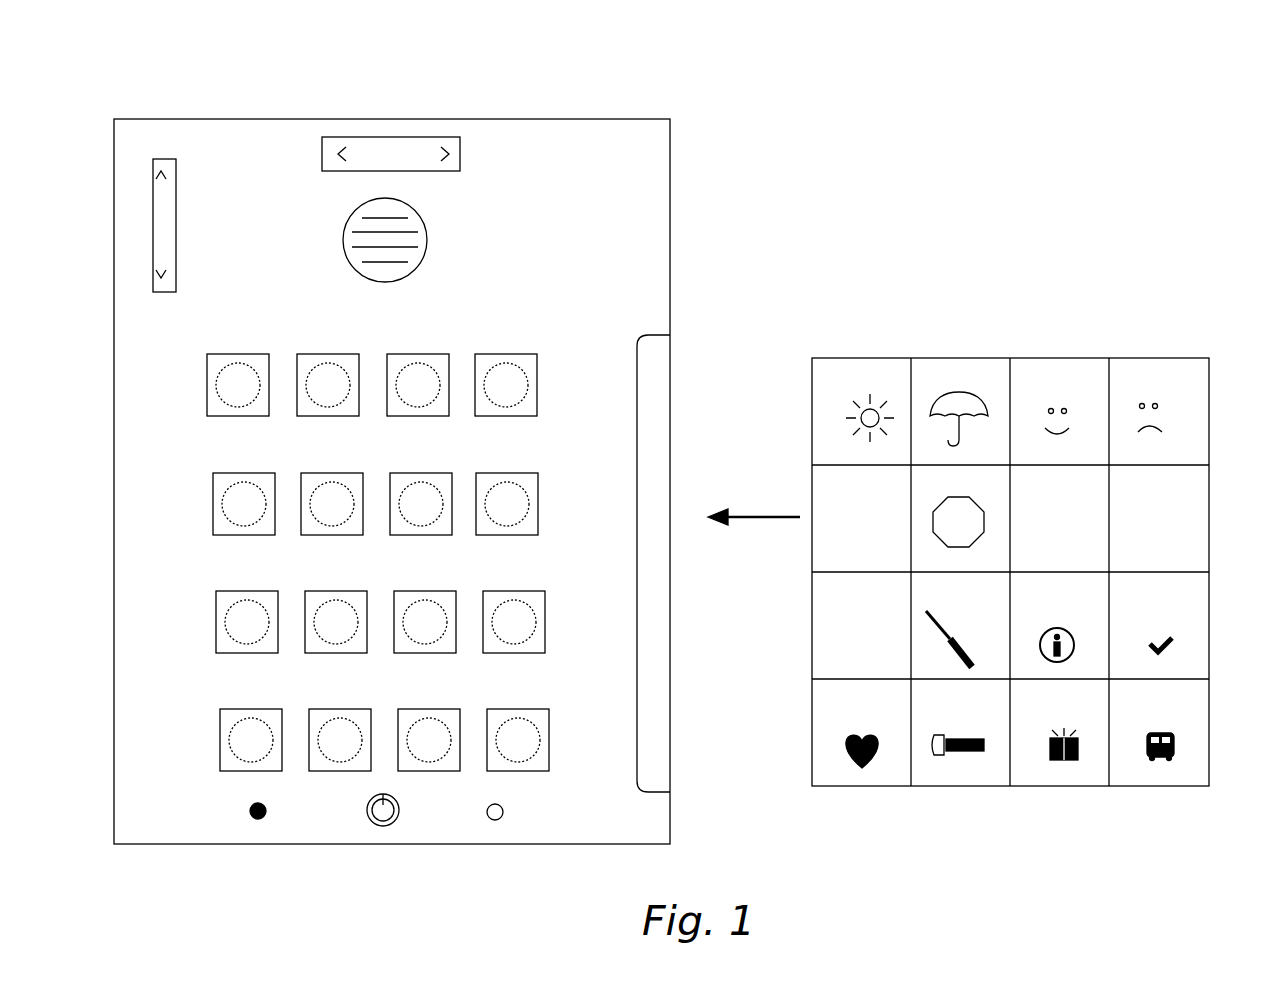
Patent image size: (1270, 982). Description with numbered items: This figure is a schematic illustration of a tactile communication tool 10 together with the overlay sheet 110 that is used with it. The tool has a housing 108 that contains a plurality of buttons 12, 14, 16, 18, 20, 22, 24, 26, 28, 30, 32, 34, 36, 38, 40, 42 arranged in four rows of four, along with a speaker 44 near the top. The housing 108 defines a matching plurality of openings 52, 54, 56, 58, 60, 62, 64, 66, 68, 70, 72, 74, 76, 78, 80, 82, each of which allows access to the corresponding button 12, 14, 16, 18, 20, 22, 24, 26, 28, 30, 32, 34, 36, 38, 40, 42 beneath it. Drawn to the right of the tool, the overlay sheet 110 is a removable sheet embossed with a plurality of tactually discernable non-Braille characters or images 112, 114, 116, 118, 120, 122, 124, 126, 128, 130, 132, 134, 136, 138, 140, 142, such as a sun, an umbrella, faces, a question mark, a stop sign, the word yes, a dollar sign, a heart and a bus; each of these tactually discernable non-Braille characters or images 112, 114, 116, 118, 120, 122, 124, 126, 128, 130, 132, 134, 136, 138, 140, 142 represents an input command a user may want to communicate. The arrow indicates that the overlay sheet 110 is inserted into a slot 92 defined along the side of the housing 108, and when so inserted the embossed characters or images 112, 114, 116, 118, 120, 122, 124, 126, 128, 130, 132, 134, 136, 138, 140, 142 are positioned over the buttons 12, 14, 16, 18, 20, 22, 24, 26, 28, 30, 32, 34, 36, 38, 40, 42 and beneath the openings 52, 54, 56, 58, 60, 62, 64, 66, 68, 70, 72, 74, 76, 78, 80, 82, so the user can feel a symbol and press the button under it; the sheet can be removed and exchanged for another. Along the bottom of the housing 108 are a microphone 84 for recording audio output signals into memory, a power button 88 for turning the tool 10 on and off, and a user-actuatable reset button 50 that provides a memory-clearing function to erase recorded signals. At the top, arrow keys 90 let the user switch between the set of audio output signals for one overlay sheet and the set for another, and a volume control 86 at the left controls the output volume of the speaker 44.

The tactile communication tool 10 is at (577, 110).
The button 12 is at (227, 394).
The button 14 is at (317, 394).
The button 16 is at (407, 394).
The button 18 is at (495, 394).
The button 20 is at (233, 513).
The button 22 is at (321, 513).
The button 24 is at (410, 513).
The button 26 is at (496, 513).
The button 28 is at (236, 631).
The button 30 is at (325, 631).
The button 32 is at (414, 631).
The button 34 is at (503, 631).
The button 36 is at (240, 749).
The button 38 is at (329, 749).
The button 40 is at (418, 749).
The button 42 is at (507, 749).
The speaker 44 is at (427, 232).
The reset button 50 is at (500, 820).
The opening 52 is at (227, 354).
The opening 54 is at (317, 354).
The opening 56 is at (407, 354).
The opening 58 is at (495, 354).
The opening 60 is at (233, 473).
The opening 62 is at (321, 473).
The opening 64 is at (410, 473).
The opening 66 is at (496, 473).
The opening 68 is at (236, 591).
The opening 70 is at (325, 591).
The opening 72 is at (414, 591).
The opening 74 is at (503, 591).
The opening 76 is at (240, 709).
The opening 78 is at (329, 709).
The opening 80 is at (418, 709).
The opening 82 is at (507, 709).
The microphone 84 is at (266, 815).
The volume control 86 is at (176, 207).
The power button 88 is at (390, 825).
The arrow keys 90 is at (460, 153).
The slot 92 is at (653, 741).
The housing 108 is at (637, 172).
The overlay sheet 110 is at (1146, 337).
The tactually discernable non-Braille character or image 112 is at (850, 383).
The tactually discernable non-Braille character or image 114 is at (949, 383).
The tactually discernable non-Braille character or image 116 is at (1048, 383).
The tactually discernable non-Braille character or image 118 is at (1147, 383).
The tactually discernable non-Braille character or image 120 is at (850, 490).
The tactually discernable non-Braille character or image 122 is at (949, 490).
The tactually discernable non-Braille character or image 124 is at (1048, 490).
The tactually discernable non-Braille character or image 126 is at (1147, 490).
The tactually discernable non-Braille character or image 128 is at (850, 597).
The tactually discernable non-Braille character or image 130 is at (949, 597).
The tactually discernable non-Braille character or image 132 is at (1048, 597).
The tactually discernable non-Braille character or image 134 is at (1147, 597).
The tactually discernable non-Braille character or image 136 is at (850, 704).
The tactually discernable non-Braille character or image 138 is at (949, 704).
The tactually discernable non-Braille character or image 140 is at (1048, 704).
The tactually discernable non-Braille character or image 142 is at (1147, 704).